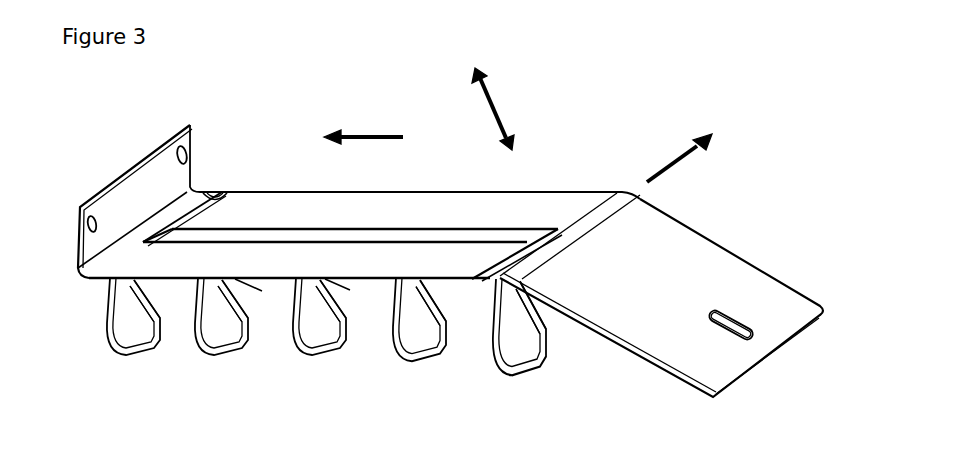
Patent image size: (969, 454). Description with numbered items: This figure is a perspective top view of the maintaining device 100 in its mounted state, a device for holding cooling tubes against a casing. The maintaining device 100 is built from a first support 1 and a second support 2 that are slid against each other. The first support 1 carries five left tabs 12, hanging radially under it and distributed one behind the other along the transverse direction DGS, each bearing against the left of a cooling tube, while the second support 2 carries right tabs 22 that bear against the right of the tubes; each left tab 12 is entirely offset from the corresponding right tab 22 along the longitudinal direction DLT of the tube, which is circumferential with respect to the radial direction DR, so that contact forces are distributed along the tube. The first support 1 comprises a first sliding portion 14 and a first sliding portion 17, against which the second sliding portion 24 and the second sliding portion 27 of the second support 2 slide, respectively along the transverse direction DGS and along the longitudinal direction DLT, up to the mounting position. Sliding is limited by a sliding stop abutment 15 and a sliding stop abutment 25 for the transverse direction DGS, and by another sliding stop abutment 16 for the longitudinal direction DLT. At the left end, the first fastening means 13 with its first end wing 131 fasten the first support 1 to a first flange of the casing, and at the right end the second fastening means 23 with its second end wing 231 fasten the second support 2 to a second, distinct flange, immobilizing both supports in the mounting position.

The maintaining device 100 is at (566, 116).
The first support 1 is at (308, 258).
The second support 2 is at (377, 204).
The left tab 12 is at (137, 323).
The first fastening means 13 is at (136, 192).
The first end wing 131 is at (175, 172).
The first sliding portion 14 is at (350, 199).
The second sliding portion 24 is at (350, 199).
The other sliding stop abutment 16 is at (423, 231).
The sliding stop abutment 15 is at (268, 178).
The first sliding portion 17 is at (268, 178).
The second sliding portion 27 is at (224, 199).
The sliding stop abutment 25 is at (527, 257).
The right tab 22 is at (258, 290).
The second fastening means 23 is at (676, 247).
The second end wing 231 is at (688, 290).
The transverse direction DGS is at (365, 133).
The radial direction DR is at (497, 107).
The longitudinal direction DLT is at (670, 159).